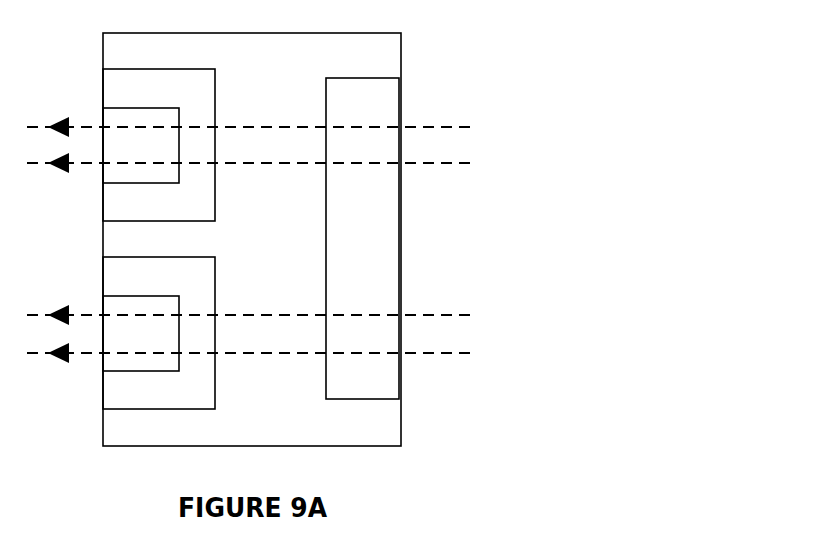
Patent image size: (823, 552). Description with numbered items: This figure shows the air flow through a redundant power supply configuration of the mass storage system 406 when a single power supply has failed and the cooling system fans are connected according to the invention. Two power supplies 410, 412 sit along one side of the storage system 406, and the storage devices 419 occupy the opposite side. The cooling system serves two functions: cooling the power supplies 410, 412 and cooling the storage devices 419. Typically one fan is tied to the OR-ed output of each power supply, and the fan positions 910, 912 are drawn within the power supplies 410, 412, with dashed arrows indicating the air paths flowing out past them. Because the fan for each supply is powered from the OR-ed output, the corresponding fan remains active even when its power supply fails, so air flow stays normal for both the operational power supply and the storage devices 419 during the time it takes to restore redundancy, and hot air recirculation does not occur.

The mass storage system 406 is at (390, 67).
The power supply 410 is at (205, 103).
The power supply 412 is at (205, 292).
The storage devices 419 is at (385, 251).
The first outlet 910 is at (162, 157).
The second outlet 912 is at (162, 345).